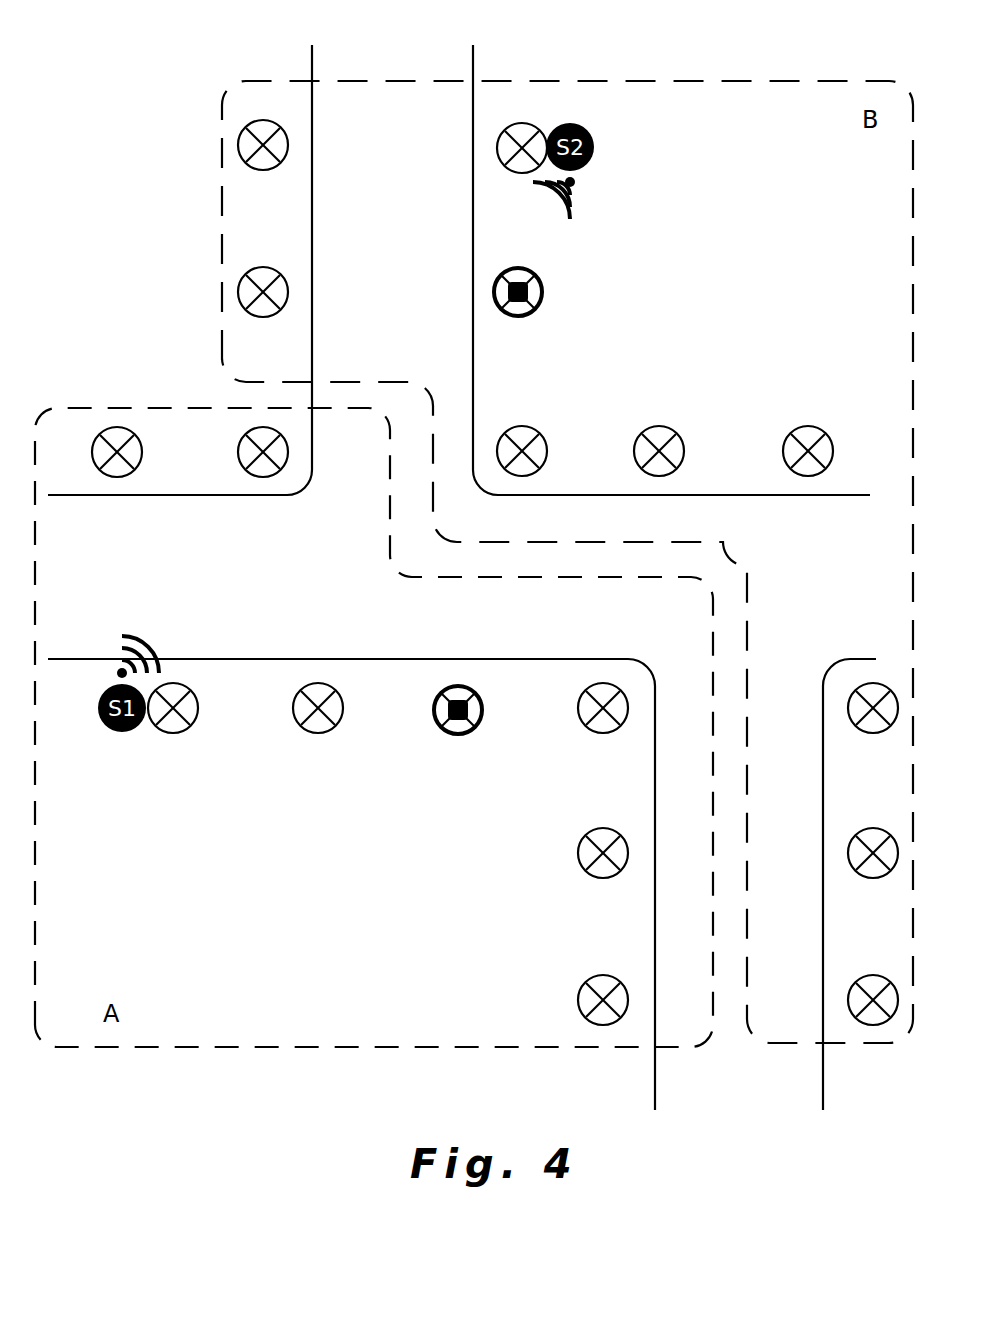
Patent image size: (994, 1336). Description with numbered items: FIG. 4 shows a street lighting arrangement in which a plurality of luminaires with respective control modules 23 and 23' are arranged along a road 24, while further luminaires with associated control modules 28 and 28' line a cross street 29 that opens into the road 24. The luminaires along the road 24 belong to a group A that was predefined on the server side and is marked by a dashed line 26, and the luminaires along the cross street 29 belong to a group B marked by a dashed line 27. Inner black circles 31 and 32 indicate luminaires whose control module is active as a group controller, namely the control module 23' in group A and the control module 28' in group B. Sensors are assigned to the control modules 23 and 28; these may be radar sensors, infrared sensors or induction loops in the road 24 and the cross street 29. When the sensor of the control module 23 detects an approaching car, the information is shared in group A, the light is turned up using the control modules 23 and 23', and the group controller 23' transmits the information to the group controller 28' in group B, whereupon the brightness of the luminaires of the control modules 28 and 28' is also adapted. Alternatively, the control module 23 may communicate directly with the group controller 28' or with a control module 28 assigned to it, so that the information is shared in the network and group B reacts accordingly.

The control module 23 is at (345, 699).
The control module 23' is at (476, 731).
The road 24 is at (233, 601).
The dashed line 26 is at (366, 1050).
The dashed line 27 is at (405, 80).
The control module 28 is at (568, 572).
The control module 28' is at (535, 313).
The cross street 29 is at (407, 266).
The inner black circle 31 is at (447, 729).
The inner black circle 32 is at (556, 313).